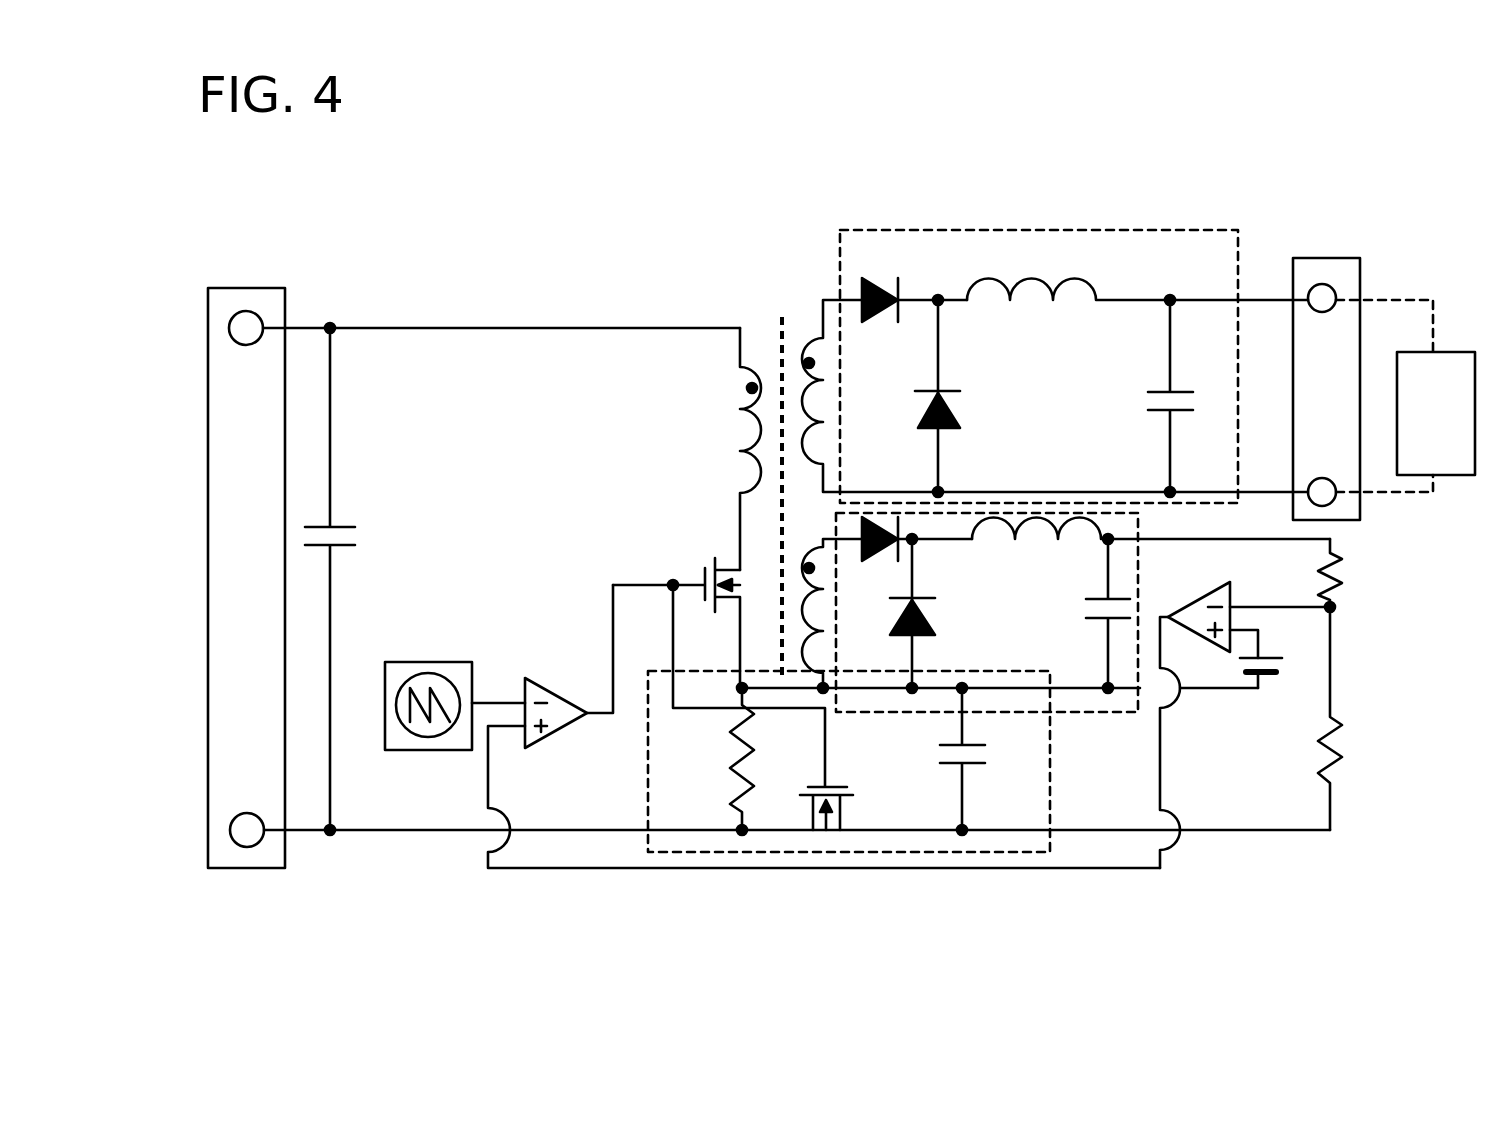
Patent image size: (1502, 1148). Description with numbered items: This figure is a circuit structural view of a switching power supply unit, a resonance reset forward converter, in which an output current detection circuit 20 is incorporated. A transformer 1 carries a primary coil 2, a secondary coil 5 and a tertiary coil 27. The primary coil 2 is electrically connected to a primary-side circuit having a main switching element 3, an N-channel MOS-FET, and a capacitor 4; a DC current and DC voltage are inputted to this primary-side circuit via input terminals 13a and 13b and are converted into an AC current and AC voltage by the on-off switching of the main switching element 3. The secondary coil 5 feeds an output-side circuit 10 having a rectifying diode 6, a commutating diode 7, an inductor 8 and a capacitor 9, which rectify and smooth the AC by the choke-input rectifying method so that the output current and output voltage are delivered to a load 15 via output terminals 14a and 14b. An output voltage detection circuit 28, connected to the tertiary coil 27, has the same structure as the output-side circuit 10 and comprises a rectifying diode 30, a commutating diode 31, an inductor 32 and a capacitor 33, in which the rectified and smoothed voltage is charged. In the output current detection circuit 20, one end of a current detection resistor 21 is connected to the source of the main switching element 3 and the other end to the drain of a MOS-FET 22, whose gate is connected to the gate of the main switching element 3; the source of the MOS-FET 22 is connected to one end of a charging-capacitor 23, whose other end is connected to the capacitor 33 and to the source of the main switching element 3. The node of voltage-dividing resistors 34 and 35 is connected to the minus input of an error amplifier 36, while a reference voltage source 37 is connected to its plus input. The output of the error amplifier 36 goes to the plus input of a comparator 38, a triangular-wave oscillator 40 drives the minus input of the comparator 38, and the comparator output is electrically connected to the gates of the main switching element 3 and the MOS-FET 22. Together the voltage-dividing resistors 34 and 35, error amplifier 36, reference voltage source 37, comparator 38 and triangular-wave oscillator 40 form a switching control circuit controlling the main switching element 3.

The transformer 1 is at (984, 446).
The primary coil 2 is at (740, 425).
The main switching element 3 is at (705, 560).
The capacitor 4 is at (342, 525).
The secondary coil 5 is at (805, 392).
The rectifying diode 6 is at (876, 278).
The commutating diode 7 is at (952, 418).
The inductor 8 is at (1040, 286).
The capacitor 9 is at (1165, 391).
The output-side circuit 10 is at (1074, 319).
The input terminal 13a is at (251, 328).
The input terminal 13b is at (249, 840).
The output terminal 14a is at (1324, 286).
The output terminal 14b is at (1334, 500).
The load 15 is at (1464, 352).
The output current detection circuit 20 is at (902, 718).
The current detection resistor 21 is at (737, 760).
The MOS-FET 22 is at (838, 787).
The charging-capacitor 23 is at (940, 758).
The tertiary coil 27 is at (800, 605).
The output voltage detection circuit 28 is at (1146, 650).
The rectifying diode 30 is at (875, 517).
The commutating diode 31 is at (935, 618).
The inductor 32 is at (995, 527).
The capacitor 33 is at (1098, 598).
The voltage-dividing resistor 34 is at (1342, 575).
The voltage-dividing resistor 35 is at (1342, 770).
The error amplifier 36 is at (1205, 643).
The reference voltage source 37 is at (1283, 667).
The comparator 38 is at (540, 678).
The triangular-wave oscillator 40 is at (433, 662).